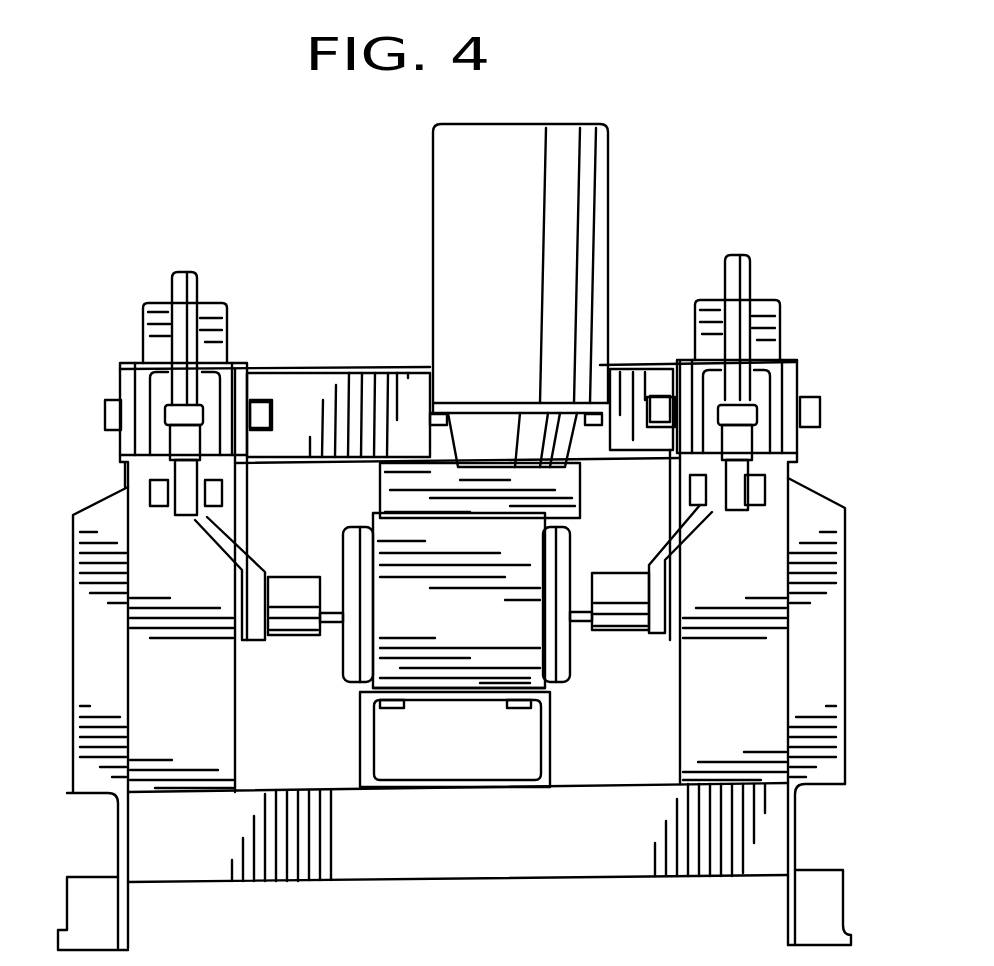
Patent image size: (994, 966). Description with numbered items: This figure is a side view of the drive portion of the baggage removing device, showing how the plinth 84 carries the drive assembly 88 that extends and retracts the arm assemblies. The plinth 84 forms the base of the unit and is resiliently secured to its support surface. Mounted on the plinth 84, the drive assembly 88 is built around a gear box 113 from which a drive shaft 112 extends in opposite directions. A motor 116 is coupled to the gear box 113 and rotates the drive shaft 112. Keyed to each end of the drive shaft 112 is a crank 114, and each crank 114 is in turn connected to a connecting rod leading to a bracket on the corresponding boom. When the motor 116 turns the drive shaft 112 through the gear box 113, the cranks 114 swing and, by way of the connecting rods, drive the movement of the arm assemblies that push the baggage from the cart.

The plinth 84 is at (183, 860).
The drive assembly 88 is at (402, 322).
The drive shaft 112 is at (337, 590).
The gear box 113 is at (530, 680).
The crank 114 is at (292, 633).
The motor 116 is at (572, 124).